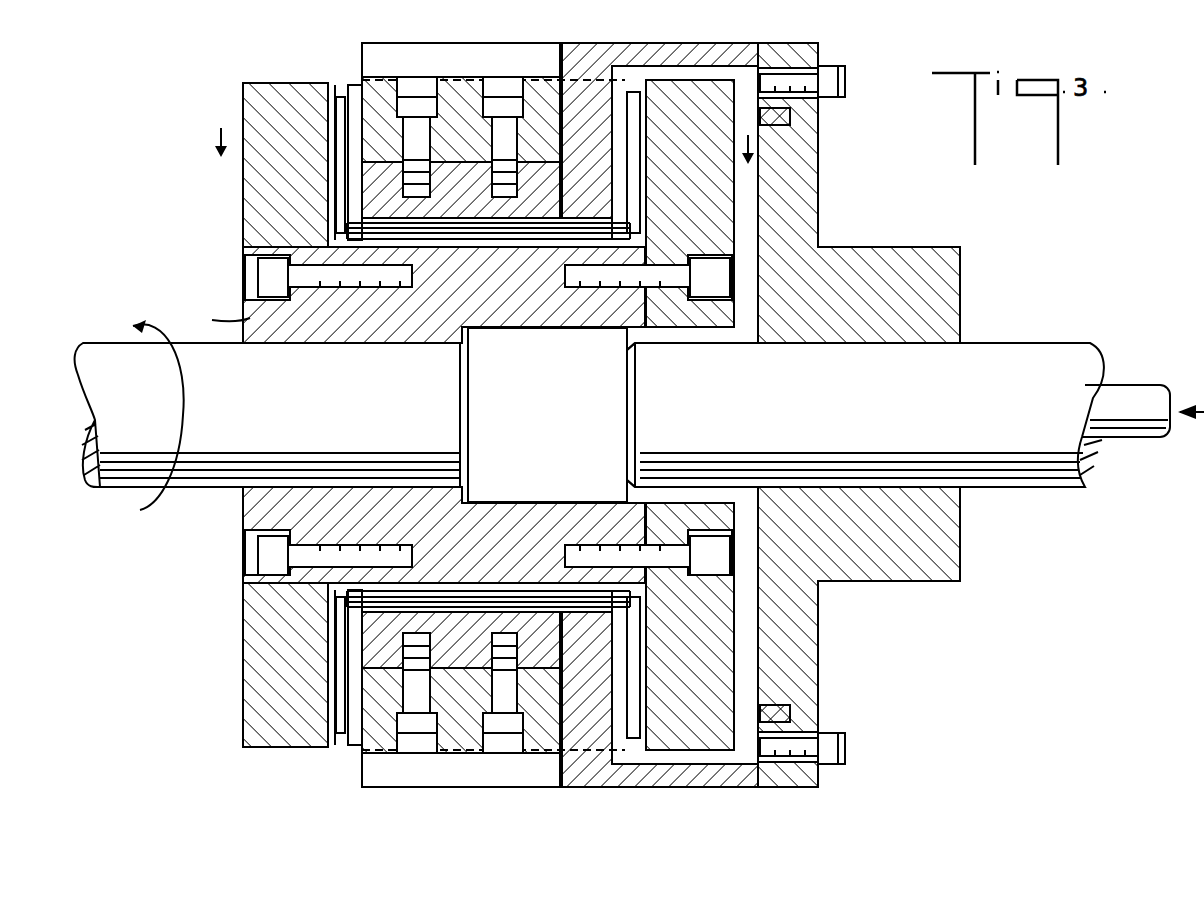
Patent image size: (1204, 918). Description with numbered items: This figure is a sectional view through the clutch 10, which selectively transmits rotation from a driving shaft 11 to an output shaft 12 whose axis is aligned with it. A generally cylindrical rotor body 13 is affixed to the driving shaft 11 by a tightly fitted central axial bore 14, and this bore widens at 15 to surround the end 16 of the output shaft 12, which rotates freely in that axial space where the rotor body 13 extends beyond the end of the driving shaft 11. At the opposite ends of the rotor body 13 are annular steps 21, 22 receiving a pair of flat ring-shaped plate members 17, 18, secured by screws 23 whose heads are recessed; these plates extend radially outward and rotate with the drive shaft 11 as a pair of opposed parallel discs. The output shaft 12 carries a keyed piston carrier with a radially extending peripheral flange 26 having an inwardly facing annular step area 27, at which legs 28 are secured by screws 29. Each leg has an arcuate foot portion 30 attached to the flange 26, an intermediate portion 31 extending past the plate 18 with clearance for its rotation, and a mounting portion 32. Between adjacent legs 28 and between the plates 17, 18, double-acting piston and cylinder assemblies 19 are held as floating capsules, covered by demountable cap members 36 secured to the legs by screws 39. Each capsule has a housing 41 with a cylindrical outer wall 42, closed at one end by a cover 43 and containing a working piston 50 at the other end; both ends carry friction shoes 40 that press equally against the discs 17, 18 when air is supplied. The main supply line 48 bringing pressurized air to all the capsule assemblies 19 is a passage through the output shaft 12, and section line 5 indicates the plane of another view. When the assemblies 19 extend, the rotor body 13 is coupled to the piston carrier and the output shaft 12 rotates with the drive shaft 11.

The section line 5- 5 is at (483, 162).
The clutch 10 is at (183, 85).
The driving shaft 11 is at (209, 477).
The output shaft 12 is at (1062, 477).
The rotor body 13 is at (239, 627).
The central axial bore 14 is at (388, 345).
The widened bore 15 is at (542, 497).
The end of output shaft 16 is at (635, 407).
The plate member 17 is at (250, 230).
The plate member 18 is at (713, 203).
The piston and cylinder assembly 19 is at (349, 67).
The annular step 21 is at (191, 406).
The annular step 22 is at (695, 300).
The screws 23 is at (306, 268).
The peripheral flange 26 is at (822, 644).
The annular step area 27 is at (790, 115).
The legs 28 is at (722, 45).
The screws 29 is at (838, 66).
The foot portion 30 is at (775, 125).
The intermediate portion 31 is at (680, 45).
The cylinder assembly mounting portion 32 is at (578, 190).
The cap member 36 is at (460, 45).
The screws 39 is at (417, 93).
The friction shoe 40 is at (342, 118).
The housing 41 is at (362, 152).
The cylindrical outer wall 42 is at (463, 730).
The cover 43 is at (662, 415).
The main supply line 48 is at (1125, 433).
The working piston 50 is at (455, 444).